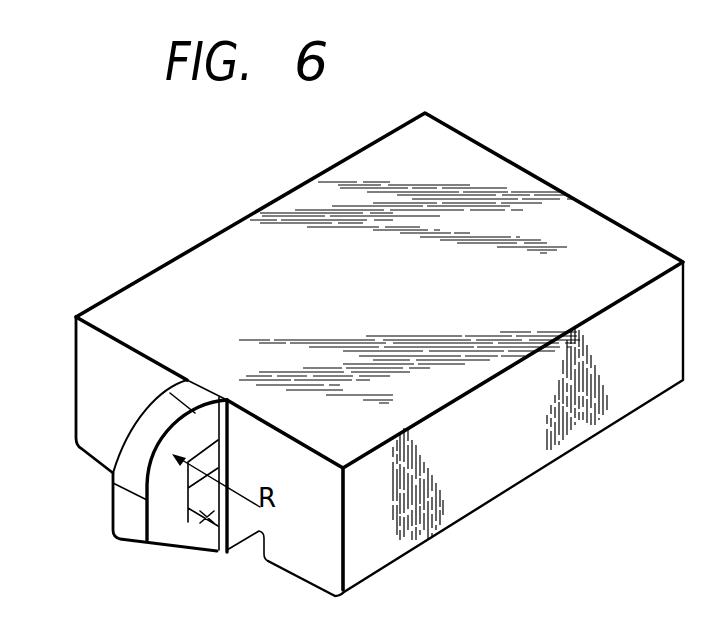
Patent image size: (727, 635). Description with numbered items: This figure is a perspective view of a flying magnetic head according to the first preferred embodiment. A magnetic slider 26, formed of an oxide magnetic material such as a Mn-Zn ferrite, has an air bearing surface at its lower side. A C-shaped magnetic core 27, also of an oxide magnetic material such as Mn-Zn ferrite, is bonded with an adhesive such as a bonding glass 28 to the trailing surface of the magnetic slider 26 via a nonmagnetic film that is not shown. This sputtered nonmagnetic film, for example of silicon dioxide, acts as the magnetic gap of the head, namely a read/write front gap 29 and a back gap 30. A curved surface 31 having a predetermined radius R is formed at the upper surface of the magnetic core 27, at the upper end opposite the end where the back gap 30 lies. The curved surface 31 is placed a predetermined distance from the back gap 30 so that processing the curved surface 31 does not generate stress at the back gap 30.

The magnetic slider 26 is at (515, 460).
The magnetic core 27 is at (160, 523).
The bonding glass 28 is at (210, 518).
The read/write front gap 29 is at (223, 552).
The back gap 30 is at (196, 385).
The curved surface 31 is at (137, 443).